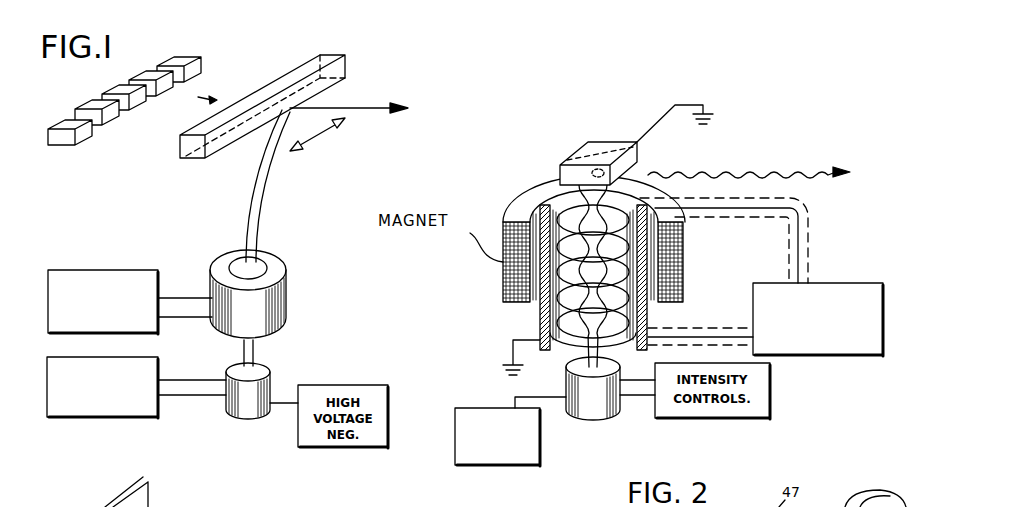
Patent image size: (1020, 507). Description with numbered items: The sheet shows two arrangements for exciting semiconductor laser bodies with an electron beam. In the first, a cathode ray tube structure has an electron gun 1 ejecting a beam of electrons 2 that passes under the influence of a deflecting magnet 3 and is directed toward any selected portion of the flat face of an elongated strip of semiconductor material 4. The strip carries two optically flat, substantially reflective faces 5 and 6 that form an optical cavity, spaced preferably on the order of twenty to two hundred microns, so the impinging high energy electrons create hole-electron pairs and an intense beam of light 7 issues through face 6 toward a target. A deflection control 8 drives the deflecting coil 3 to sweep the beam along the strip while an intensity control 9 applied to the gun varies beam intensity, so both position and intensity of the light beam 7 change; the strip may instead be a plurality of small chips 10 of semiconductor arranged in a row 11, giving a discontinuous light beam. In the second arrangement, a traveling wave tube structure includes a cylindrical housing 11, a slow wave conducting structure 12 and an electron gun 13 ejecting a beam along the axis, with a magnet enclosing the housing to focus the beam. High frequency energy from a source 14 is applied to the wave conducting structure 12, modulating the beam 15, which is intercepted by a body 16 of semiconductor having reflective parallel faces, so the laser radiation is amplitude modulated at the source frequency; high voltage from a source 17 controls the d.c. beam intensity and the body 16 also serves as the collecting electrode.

In FIG. 1, the electron gun 1 is at (228, 404).
In FIG. 1, the beam of electrons 2 is at (258, 354).
In FIG. 1, the deflecting magnet 3 is at (278, 304).
In FIG. 1, the elongated strip of semiconductor material 4 is at (194, 103).
In FIG. 1, the reflective face 5 is at (178, 150).
In FIG. 1, the reflective face 6 is at (235, 143).
In FIG. 1, the beam of light 7 is at (343, 107).
In FIG. 1, the deflection control 8 is at (118, 268).
In FIG. 1, the intensity control 9 is at (118, 420).
In FIG. 1, the chips 10 is at (80, 150).
In FIG. 1, the row 11 is at (165, 42).
In FIG. 2, the row 11 is at (540, 313).
In FIG. 2, the slow wave conducting structure 12 is at (572, 342).
In FIG. 2, the electron gun 13 is at (606, 412).
In FIG. 2, the source 14 is at (830, 283).
In FIG. 2, the electron beam 15 is at (598, 347).
In FIG. 2, the body of semiconductor material 16 is at (580, 143).
In FIG. 2, the source 17 is at (541, 447).